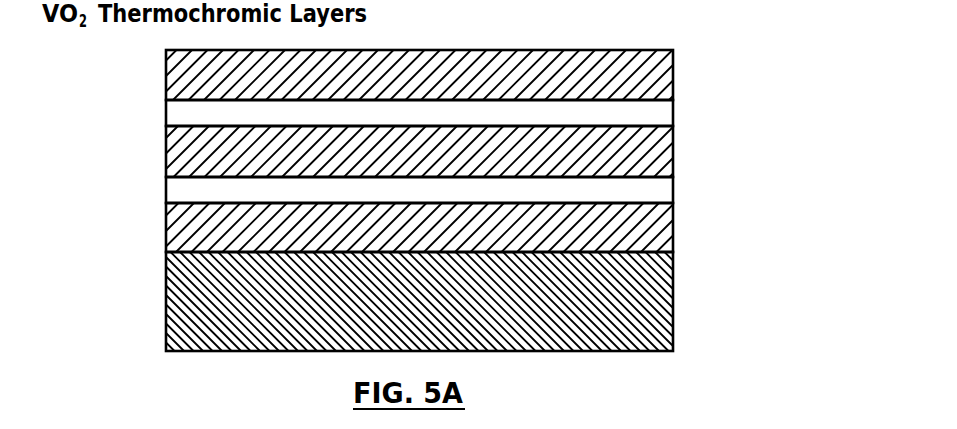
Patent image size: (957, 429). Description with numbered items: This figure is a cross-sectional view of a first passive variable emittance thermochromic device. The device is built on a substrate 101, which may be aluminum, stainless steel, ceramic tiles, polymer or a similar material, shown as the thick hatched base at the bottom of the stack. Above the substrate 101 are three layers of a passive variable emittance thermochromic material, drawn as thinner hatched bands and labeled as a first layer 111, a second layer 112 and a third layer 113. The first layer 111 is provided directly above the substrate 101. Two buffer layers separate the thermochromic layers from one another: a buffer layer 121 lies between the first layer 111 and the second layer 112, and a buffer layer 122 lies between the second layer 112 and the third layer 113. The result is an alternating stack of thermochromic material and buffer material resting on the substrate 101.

The third layer of passive variable emittance thermochromic material 113 is at (166, 79).
The second layer of passive variable emittance thermochromic material 112 is at (166, 164).
The first layer of passive variable emittance thermochromic material 111 is at (166, 233).
The buffer layer 122 is at (673, 111).
The buffer layer 121 is at (673, 190).
The substrate 101 is at (673, 305).